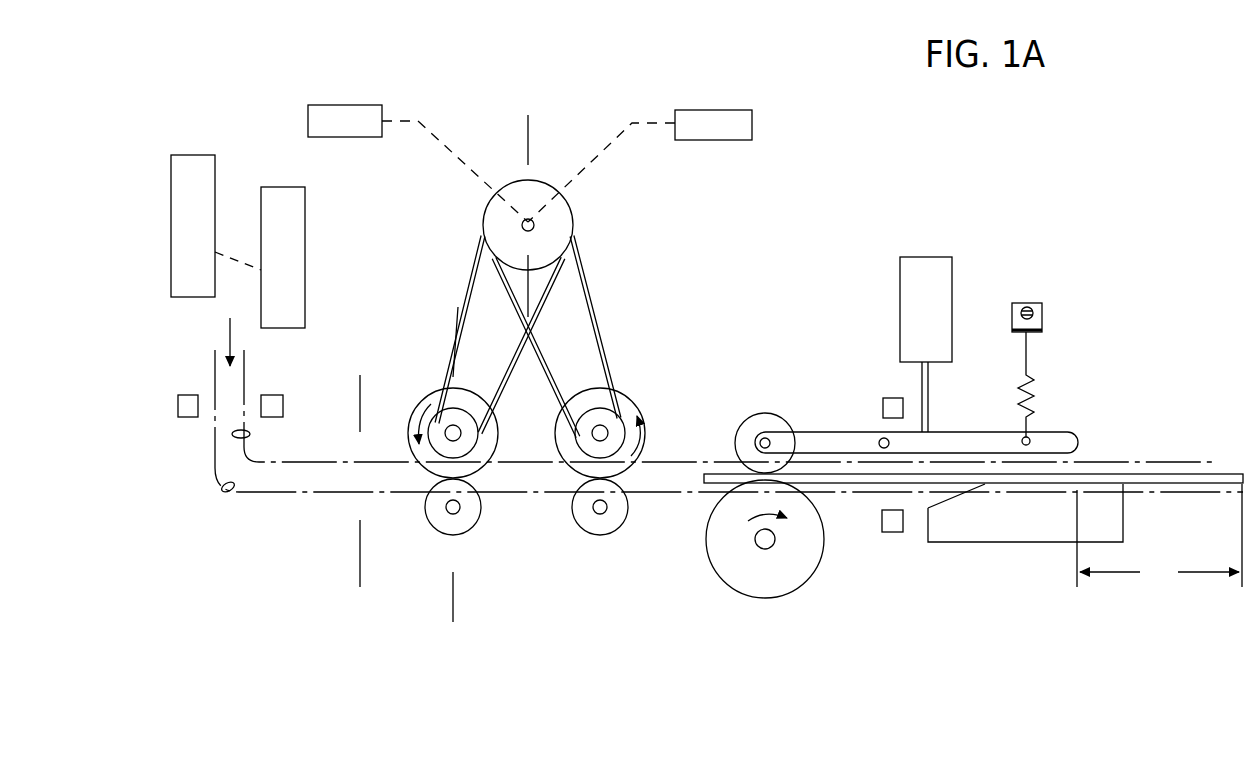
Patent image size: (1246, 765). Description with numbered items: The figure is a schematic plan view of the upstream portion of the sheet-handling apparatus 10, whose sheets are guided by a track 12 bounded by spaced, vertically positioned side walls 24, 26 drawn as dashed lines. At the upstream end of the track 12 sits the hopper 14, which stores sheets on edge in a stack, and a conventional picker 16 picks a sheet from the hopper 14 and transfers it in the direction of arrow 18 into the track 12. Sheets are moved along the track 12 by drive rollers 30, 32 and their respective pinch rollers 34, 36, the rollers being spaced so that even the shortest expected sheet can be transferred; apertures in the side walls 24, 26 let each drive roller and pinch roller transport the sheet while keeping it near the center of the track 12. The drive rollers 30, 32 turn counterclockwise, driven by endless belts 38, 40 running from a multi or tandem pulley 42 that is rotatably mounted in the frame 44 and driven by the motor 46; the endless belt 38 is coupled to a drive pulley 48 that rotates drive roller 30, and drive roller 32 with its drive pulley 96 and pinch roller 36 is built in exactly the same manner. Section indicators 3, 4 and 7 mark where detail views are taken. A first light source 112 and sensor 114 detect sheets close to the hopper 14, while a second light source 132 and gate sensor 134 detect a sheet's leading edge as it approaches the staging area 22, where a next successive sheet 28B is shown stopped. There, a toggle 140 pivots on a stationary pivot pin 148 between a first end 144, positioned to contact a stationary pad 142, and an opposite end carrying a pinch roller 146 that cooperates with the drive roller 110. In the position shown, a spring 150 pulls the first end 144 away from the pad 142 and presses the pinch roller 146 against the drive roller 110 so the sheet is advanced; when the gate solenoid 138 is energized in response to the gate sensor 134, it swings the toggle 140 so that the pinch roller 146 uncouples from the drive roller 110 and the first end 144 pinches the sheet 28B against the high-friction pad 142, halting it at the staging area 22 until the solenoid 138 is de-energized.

The apparatus 10 is at (876, 205).
The track 12 is at (250, 514).
The hopper 14 is at (193, 150).
The picker 16 is at (306, 244).
The arrow 18 is at (228, 336).
The staging area 22 is at (957, 566).
The side wall 24 is at (224, 488).
The side wall 26 is at (248, 433).
The next successive sheet 28B is at (1201, 479).
The drive roller 30 is at (425, 392).
The drive roller 32 is at (633, 392).
The pinch roller 34 is at (476, 527).
The pinch roller 36 is at (601, 538).
The endless belt 38 is at (468, 286).
The endless belt 40 is at (588, 292).
The tandem pulley 42 is at (570, 213).
The frame 44 is at (345, 105).
The motor 46 is at (708, 110).
The drive pulley 48 is at (464, 433).
The drive pulley 96 is at (592, 416).
The drive roller 110 is at (739, 586).
The light source 112 is at (272, 395).
The sensor 114 is at (188, 394).
The light source 132 is at (891, 397).
The gate sensor 134 is at (893, 533).
The gate solenoid 138 is at (935, 268).
The toggle 140 is at (805, 428).
The pad 142 is at (1048, 533).
The first end 144 is at (1060, 435).
The pinch roller 146 is at (746, 420).
The pivot pin 148 is at (880, 437).
The spring 150 is at (1031, 383).
The section line 3- 3 is at (398, 388).
The section line 4- 4 is at (443, 330).
The section line 7- 7 is at (528, 123).